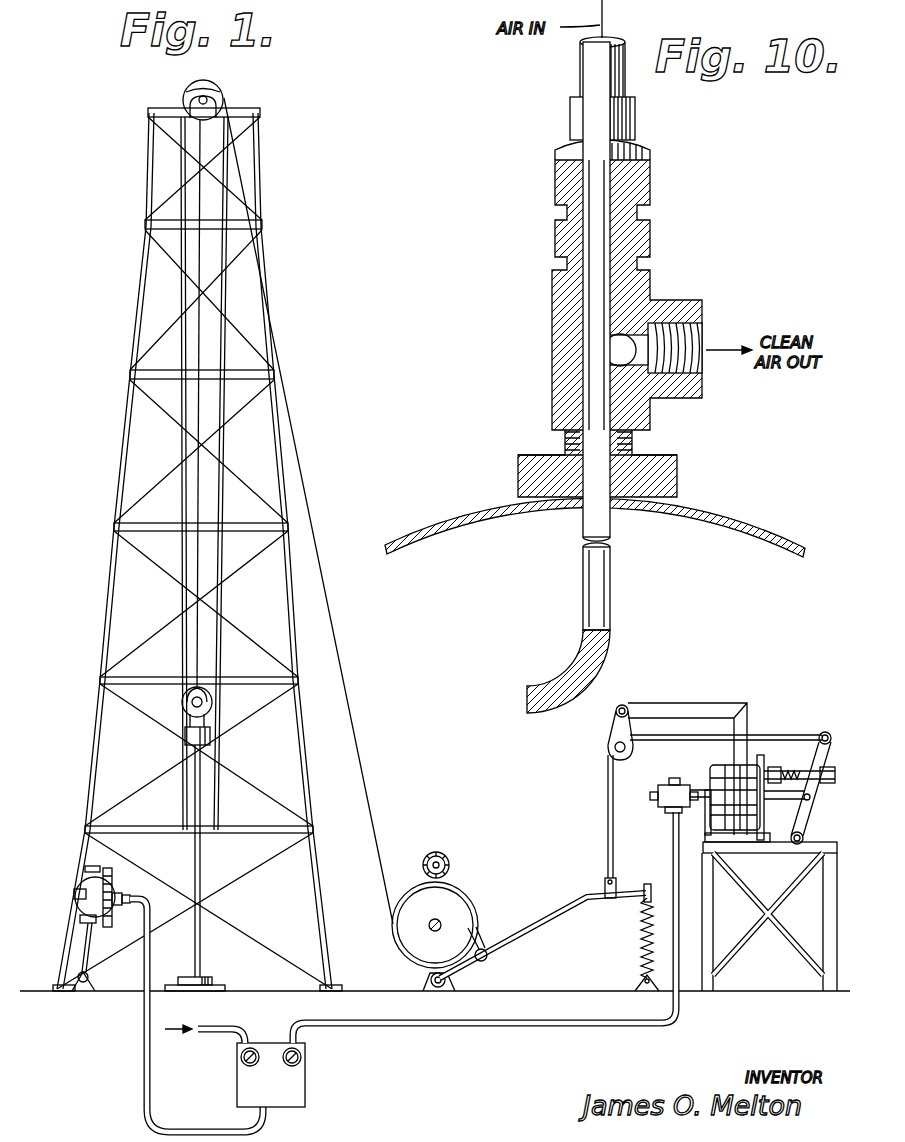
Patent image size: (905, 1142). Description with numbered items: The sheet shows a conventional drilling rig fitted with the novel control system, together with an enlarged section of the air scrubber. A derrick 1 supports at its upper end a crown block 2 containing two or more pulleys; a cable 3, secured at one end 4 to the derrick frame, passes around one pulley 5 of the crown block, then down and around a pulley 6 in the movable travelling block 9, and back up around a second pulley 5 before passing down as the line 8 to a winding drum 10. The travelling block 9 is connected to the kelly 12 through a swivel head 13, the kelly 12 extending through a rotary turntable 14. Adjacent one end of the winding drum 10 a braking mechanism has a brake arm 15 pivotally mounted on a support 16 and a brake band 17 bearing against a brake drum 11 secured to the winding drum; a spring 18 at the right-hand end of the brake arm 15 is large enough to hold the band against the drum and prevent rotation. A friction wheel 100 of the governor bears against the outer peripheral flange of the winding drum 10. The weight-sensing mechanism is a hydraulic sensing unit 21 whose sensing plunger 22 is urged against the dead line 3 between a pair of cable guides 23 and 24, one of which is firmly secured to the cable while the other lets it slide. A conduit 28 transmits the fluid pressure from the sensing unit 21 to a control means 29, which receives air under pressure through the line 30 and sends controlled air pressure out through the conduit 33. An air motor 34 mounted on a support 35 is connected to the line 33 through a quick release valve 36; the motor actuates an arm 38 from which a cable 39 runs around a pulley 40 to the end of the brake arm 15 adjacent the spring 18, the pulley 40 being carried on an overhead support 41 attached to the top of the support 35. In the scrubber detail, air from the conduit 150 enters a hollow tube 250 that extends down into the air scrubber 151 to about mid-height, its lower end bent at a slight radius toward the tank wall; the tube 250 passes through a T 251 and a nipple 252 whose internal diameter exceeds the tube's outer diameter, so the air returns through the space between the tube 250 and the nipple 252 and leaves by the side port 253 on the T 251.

In FIG. 1, the derrick 1 is at (136, 250).
In FIG. 1, the crown block 2 is at (218, 95).
In FIG. 1, the cable 3 is at (143, 434).
In FIG. 1, the cable end 4 is at (84, 990).
In FIG. 1, the pulley 5 is at (186, 92).
In FIG. 1, the pulley 6 is at (183, 705).
In FIG. 1, the hoisting cable 8 is at (352, 690).
In FIG. 1, the travelling block 9 is at (195, 712).
In FIG. 1, the winding drum 10 is at (460, 887).
In FIG. 1, the brake drum 11 is at (412, 932).
In FIG. 1, the kelly 12 is at (203, 800).
In FIG. 1, the swivel head 13 is at (212, 738).
In FIG. 1, the rotary turntable 14 is at (213, 980).
In FIG. 1, the brake arm 15 is at (535, 906).
In FIG. 1, the support 16 is at (455, 985).
In FIG. 1, the brake band 17 is at (480, 935).
In FIG. 1, the spring 18 is at (637, 946).
In FIG. 1, the hydraulic sensing unit 21 is at (113, 880).
In FIG. 1, the sensing plunger 22 is at (80, 893).
In FIG. 1, the cable guide 23 is at (88, 868).
In FIG. 1, the cable guide 24 is at (80, 918).
In FIG. 1, the conduit 28 is at (143, 1092).
In FIG. 1, the control means 29 is at (290, 1085).
In FIG. 1, the conduit 30 is at (210, 1032).
In FIG. 1, the conduit 33 is at (492, 1027).
In FIG. 1, the air motor 34 is at (706, 772).
In FIG. 1, the support 35 is at (712, 992).
In FIG. 1, the quick release valve 36 is at (663, 808).
In FIG. 1, the arm 38 is at (812, 813).
In FIG. 1, the cable 39 is at (775, 735).
In FIG. 1, the pulley 40 is at (603, 748).
In FIG. 1, the overhead support 41 is at (700, 708).
In FIG. 1, the friction wheel 100 is at (437, 850).
In FIG. 10, the conduit 150 is at (577, 72).
In FIG. 10, the air scrubber 151 is at (705, 512).
In FIG. 10, the hollow tube 250 is at (590, 590).
In FIG. 10, the T 251 is at (555, 328).
In FIG. 10, the nipple 252 is at (635, 447).
In FIG. 10, the side port 253 is at (700, 333).